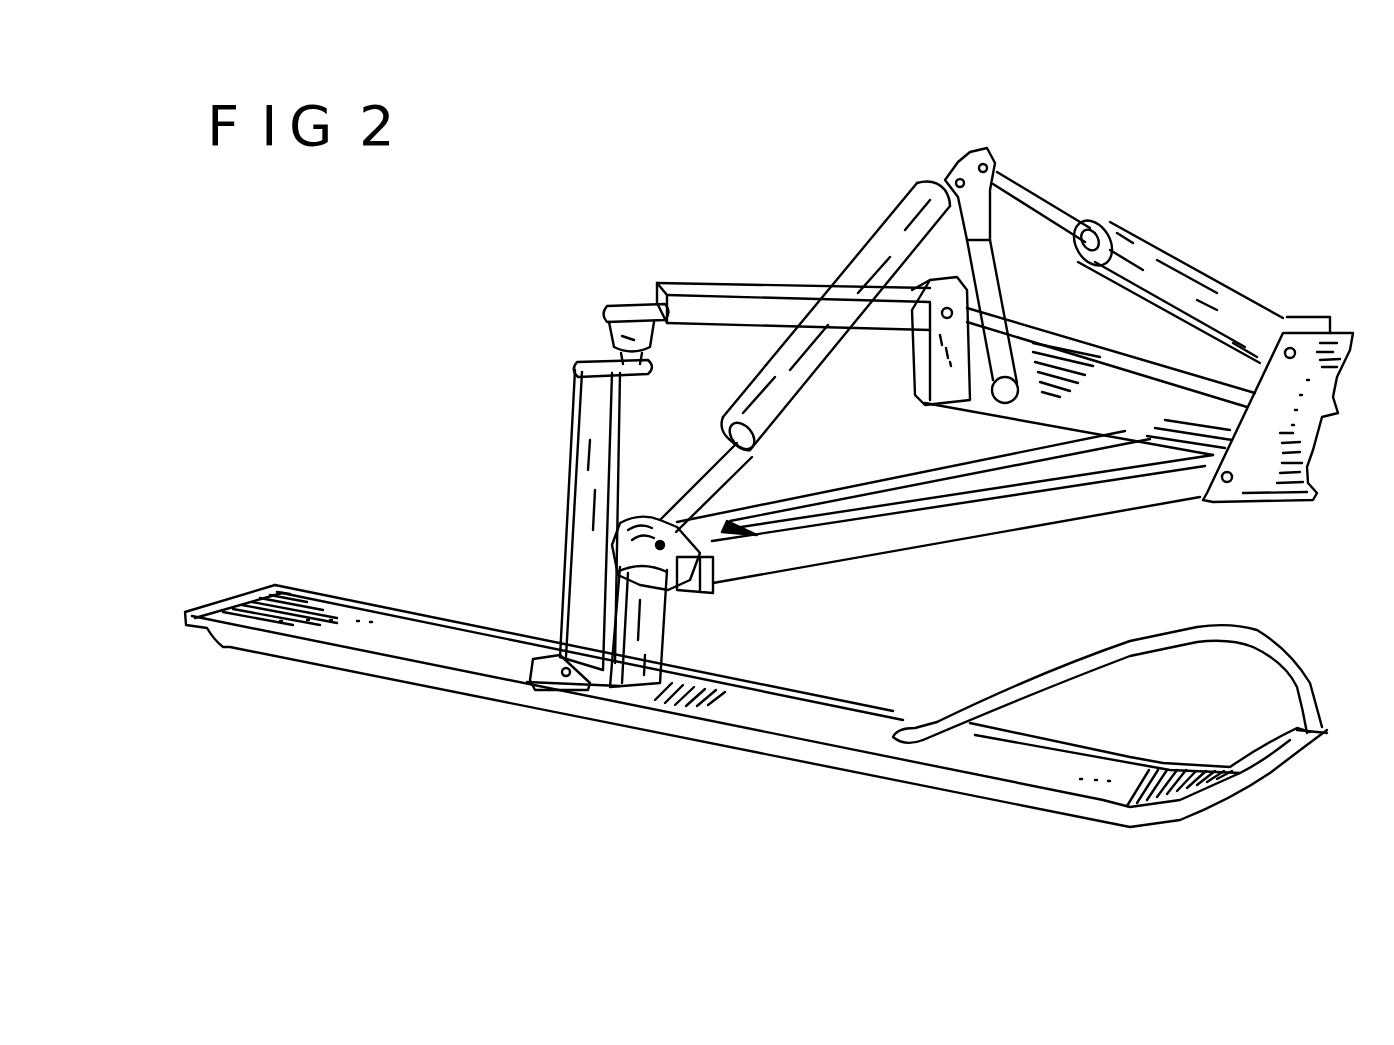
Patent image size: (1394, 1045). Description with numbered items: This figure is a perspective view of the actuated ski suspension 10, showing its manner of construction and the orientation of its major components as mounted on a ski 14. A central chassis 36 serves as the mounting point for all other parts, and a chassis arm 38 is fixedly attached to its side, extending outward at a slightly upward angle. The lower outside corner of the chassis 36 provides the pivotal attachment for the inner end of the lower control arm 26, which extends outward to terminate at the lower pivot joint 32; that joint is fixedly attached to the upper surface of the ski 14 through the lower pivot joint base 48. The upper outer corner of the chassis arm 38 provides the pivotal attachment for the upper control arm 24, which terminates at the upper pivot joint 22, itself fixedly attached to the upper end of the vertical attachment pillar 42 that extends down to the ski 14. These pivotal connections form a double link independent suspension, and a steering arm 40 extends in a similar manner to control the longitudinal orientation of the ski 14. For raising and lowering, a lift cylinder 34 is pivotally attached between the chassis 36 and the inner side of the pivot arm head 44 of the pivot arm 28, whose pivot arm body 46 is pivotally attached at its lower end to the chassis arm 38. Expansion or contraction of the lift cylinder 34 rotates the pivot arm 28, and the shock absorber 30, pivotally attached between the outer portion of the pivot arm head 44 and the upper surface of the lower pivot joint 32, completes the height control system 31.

The actuated ski suspension 10 is at (658, 228).
The ski 14 is at (460, 697).
The upper pivot joint 22 is at (612, 348).
The upper control arm 24 is at (765, 283).
The lower control arm 26 is at (900, 540).
The pivot arm 28 is at (1005, 130).
The shock absorber 30 is at (903, 185).
The height control system 31 is at (853, 182).
The lower pivot joint 32 is at (630, 538).
The lift cylinder 34 is at (1150, 227).
The chassis 36 is at (1322, 327).
The chassis arm 38 is at (1080, 410).
The steering arm 40 is at (815, 505).
The vertical attachment pillar 42 is at (562, 556).
The pivot arm head 44 is at (965, 158).
The pivot arm body 46 is at (998, 255).
The lower pivot joint base 48 is at (627, 655).